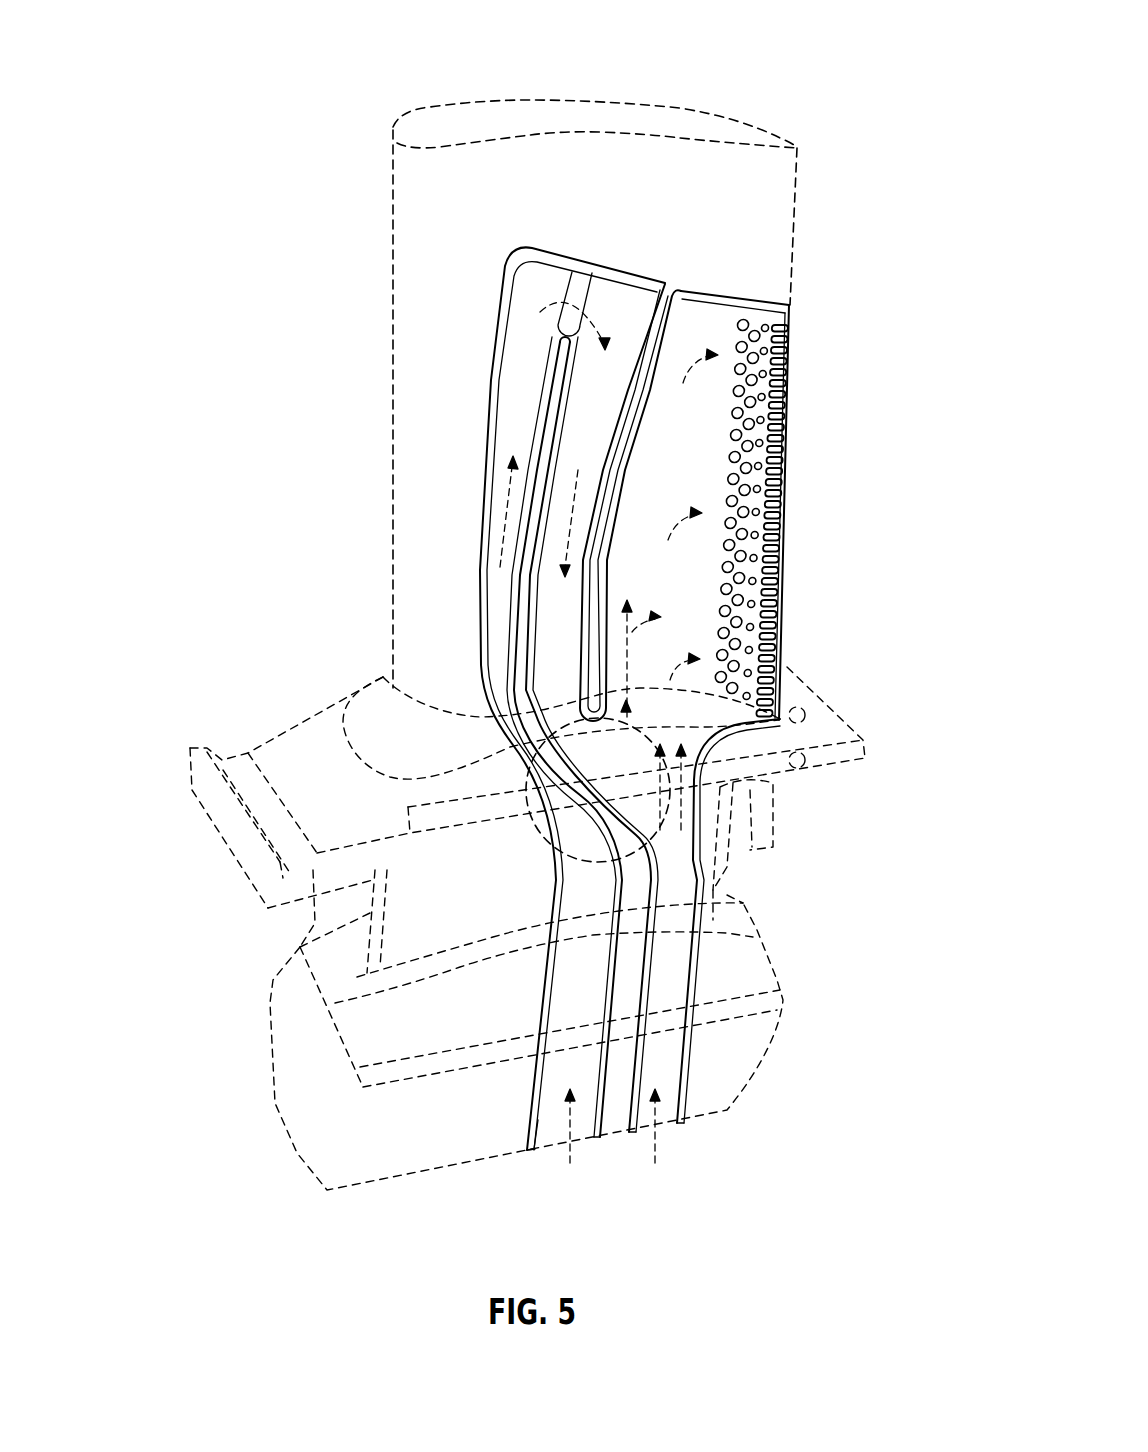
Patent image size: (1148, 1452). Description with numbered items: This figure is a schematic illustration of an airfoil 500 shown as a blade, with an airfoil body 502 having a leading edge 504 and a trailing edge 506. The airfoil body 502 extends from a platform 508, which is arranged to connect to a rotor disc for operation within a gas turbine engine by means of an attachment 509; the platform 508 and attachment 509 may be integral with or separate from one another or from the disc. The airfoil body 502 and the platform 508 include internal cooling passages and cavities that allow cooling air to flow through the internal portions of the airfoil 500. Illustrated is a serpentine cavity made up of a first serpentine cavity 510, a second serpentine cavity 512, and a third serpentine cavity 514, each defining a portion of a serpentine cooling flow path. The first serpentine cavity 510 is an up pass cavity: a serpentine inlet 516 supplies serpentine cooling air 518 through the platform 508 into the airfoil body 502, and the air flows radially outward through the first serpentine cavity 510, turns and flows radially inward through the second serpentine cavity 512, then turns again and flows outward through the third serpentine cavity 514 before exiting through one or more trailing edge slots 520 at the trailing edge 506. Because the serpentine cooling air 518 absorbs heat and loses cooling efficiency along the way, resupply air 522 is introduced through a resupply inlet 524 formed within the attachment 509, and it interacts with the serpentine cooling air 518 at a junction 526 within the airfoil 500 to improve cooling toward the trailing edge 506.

The airfoil 500 is at (428, 38).
The airfoil body 502 is at (414, 257).
The leading edge 504 is at (417, 562).
The trailing edge 506 is at (790, 229).
The platform 508 is at (200, 790).
The attachment 509 is at (297, 1043).
The first serpentine cavity 510 is at (545, 365).
The second serpentine cavity 512 is at (616, 413).
The third serpentine cavity 514 is at (704, 440).
The serpentine inlet 516 is at (576, 1200).
The serpentine cooling air 518 is at (536, 1148).
The trailing edge slots 520 is at (782, 632).
The resupply air 522 is at (652, 1162).
The resupply inlet 524 is at (655, 1200).
The junction 526 is at (538, 820).